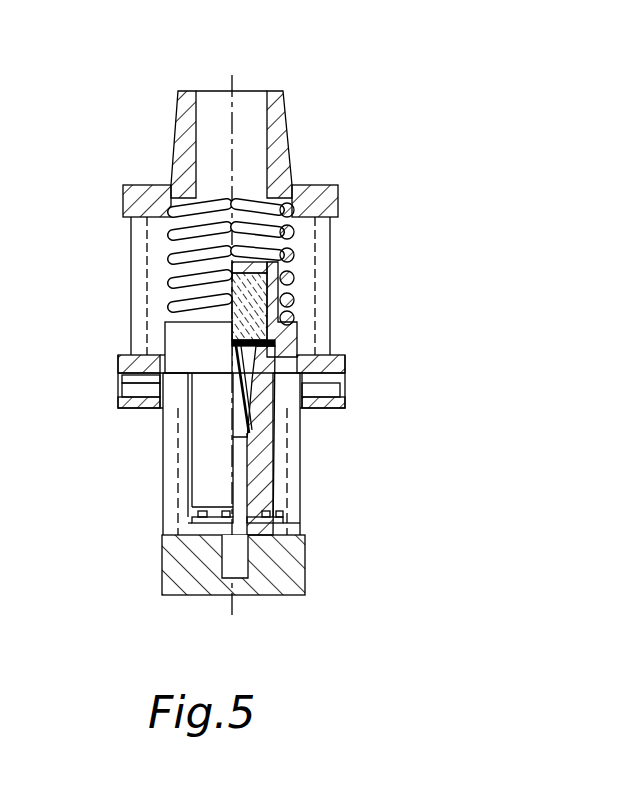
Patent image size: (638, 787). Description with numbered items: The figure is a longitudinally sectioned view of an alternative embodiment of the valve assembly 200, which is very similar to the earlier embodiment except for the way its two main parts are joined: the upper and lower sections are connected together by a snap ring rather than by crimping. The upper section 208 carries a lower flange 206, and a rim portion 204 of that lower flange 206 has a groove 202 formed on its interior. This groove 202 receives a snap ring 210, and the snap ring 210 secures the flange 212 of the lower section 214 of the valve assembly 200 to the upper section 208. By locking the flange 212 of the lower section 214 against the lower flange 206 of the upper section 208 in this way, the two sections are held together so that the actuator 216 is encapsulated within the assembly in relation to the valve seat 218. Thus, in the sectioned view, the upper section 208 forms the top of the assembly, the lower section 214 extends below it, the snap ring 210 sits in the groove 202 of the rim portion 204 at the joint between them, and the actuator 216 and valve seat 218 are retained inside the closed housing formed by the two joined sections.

The valve assembly 200 is at (249, 46).
The groove 202 is at (148, 403).
The rim portion 204 is at (120, 383).
The lower flange 206 is at (125, 355).
The upper section 208 is at (126, 242).
The snap ring 210 is at (318, 397).
The flange 212 is at (338, 378).
The lower section 214 is at (304, 502).
The actuator 216 is at (177, 334).
The valve seat 218 is at (313, 362).